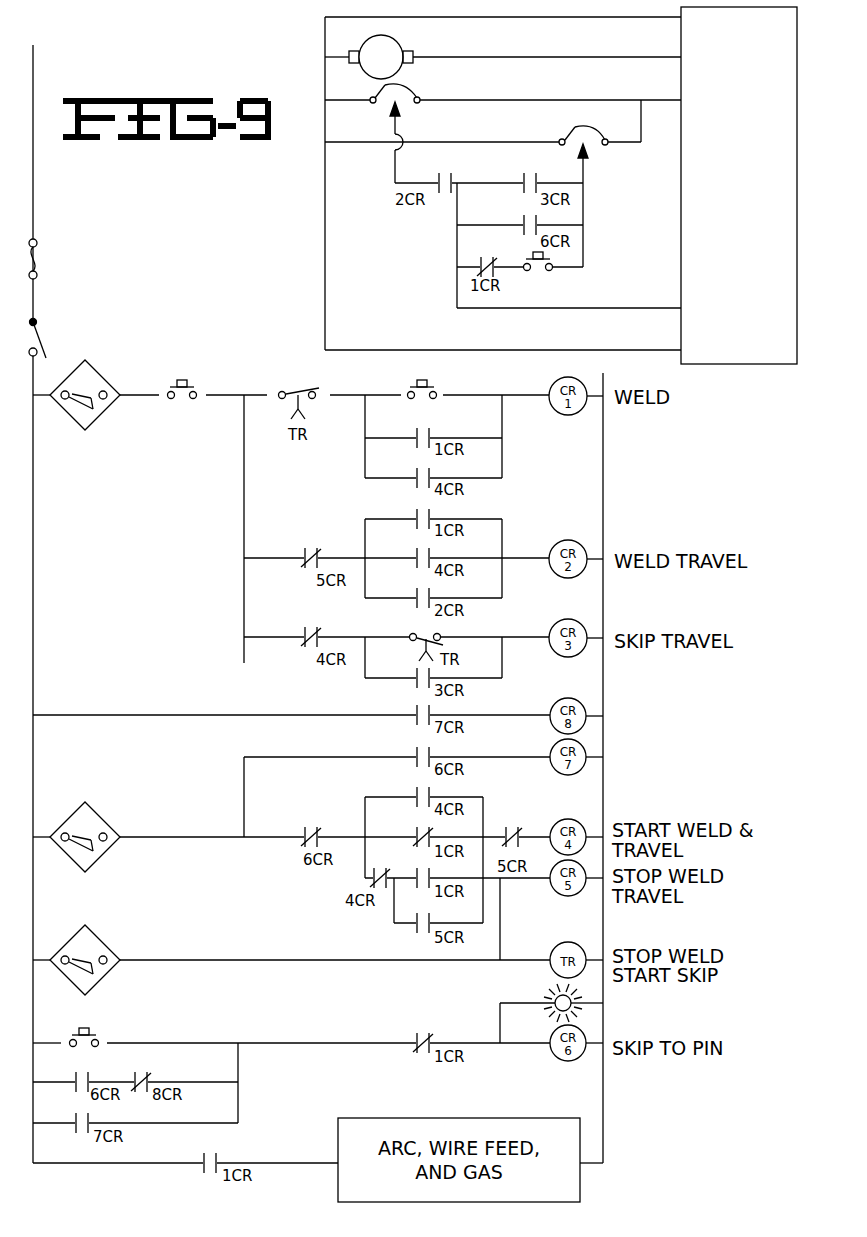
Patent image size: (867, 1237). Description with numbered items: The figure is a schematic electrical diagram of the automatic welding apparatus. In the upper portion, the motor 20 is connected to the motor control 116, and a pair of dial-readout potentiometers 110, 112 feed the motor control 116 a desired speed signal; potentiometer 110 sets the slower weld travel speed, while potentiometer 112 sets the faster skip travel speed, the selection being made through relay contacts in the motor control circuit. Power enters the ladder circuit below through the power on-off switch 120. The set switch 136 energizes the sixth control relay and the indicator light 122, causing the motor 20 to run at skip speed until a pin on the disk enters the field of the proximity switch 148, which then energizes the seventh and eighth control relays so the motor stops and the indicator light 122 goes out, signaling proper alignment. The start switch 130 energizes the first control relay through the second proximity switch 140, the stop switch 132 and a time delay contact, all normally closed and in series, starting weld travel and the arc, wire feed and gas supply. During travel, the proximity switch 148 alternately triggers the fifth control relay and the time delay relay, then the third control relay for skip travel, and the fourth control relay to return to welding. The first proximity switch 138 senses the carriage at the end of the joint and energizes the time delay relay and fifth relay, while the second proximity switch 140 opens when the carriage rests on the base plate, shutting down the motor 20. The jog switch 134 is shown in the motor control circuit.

The motor 20 is at (393, 40).
The potentiometer 110 is at (412, 92).
The potentiometer 112 is at (576, 125).
The motor control 116 is at (749, 256).
The power on-off switch 120 is at (42, 338).
The indicator light 122 is at (554, 998).
The start switch 130 is at (428, 382).
The stop switch 132 is at (188, 387).
The jog switch 134 is at (540, 273).
The set switch 136 is at (92, 1029).
The first proximity switch 138 is at (95, 938).
The second proximity switch 140 is at (98, 372).
The proximity switch 148 is at (92, 813).